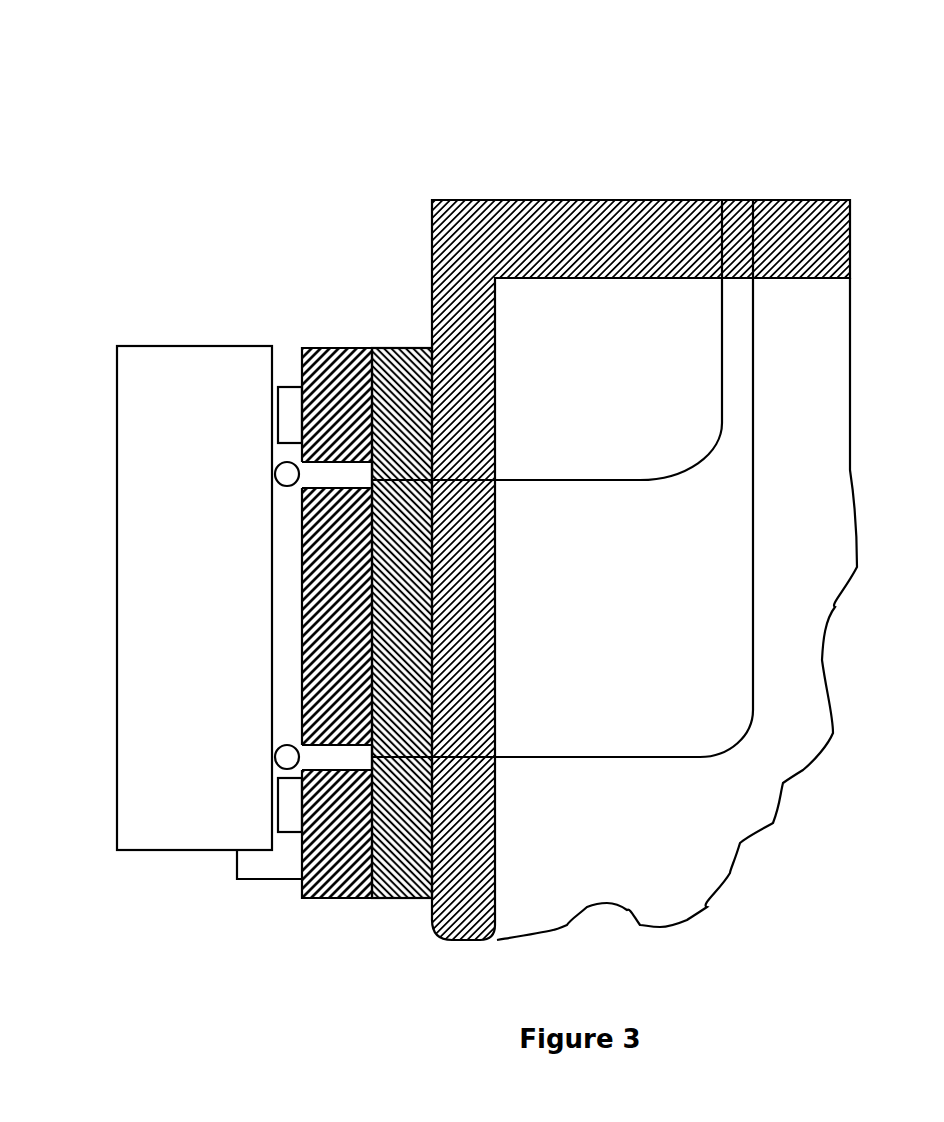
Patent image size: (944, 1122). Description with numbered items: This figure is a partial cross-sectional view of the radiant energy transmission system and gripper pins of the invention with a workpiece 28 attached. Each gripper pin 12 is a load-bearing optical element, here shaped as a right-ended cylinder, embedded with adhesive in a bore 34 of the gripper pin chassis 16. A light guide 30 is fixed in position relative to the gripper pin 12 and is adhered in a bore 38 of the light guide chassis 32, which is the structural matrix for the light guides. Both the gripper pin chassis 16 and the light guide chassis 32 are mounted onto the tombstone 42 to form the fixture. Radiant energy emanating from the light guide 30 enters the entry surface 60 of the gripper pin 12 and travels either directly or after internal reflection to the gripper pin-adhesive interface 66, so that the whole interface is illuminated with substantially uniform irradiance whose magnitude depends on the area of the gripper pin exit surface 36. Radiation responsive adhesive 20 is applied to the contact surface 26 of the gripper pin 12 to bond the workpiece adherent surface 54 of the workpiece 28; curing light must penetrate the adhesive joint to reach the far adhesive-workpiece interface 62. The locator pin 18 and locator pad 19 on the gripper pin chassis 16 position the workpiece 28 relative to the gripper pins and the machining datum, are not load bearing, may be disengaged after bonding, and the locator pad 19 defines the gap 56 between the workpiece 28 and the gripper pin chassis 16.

The gripper pin 12 is at (362, 898).
The gripper pin chassis 16 is at (343, 350).
The locator pin 18 is at (247, 863).
The locator pad 19 is at (293, 393).
The radiation responsive adhesive 20 is at (277, 477).
The contact surface 26 is at (290, 745).
The workpiece 28 is at (181, 355).
The light guide 30 is at (750, 548).
The light guide chassis 32 is at (402, 350).
The bore 34 is at (323, 770).
The gripper pin exit surface 36 is at (277, 473).
The bore 38 is at (393, 757).
The tombstone 42 is at (475, 228).
The workpiece adherent surface 54 is at (272, 587).
The gap 56 is at (287, 663).
The entry surface 60 is at (372, 468).
The adhesive-workpiece interface 62 is at (272, 757).
The gripper pin-adhesive interface 66 is at (297, 763).